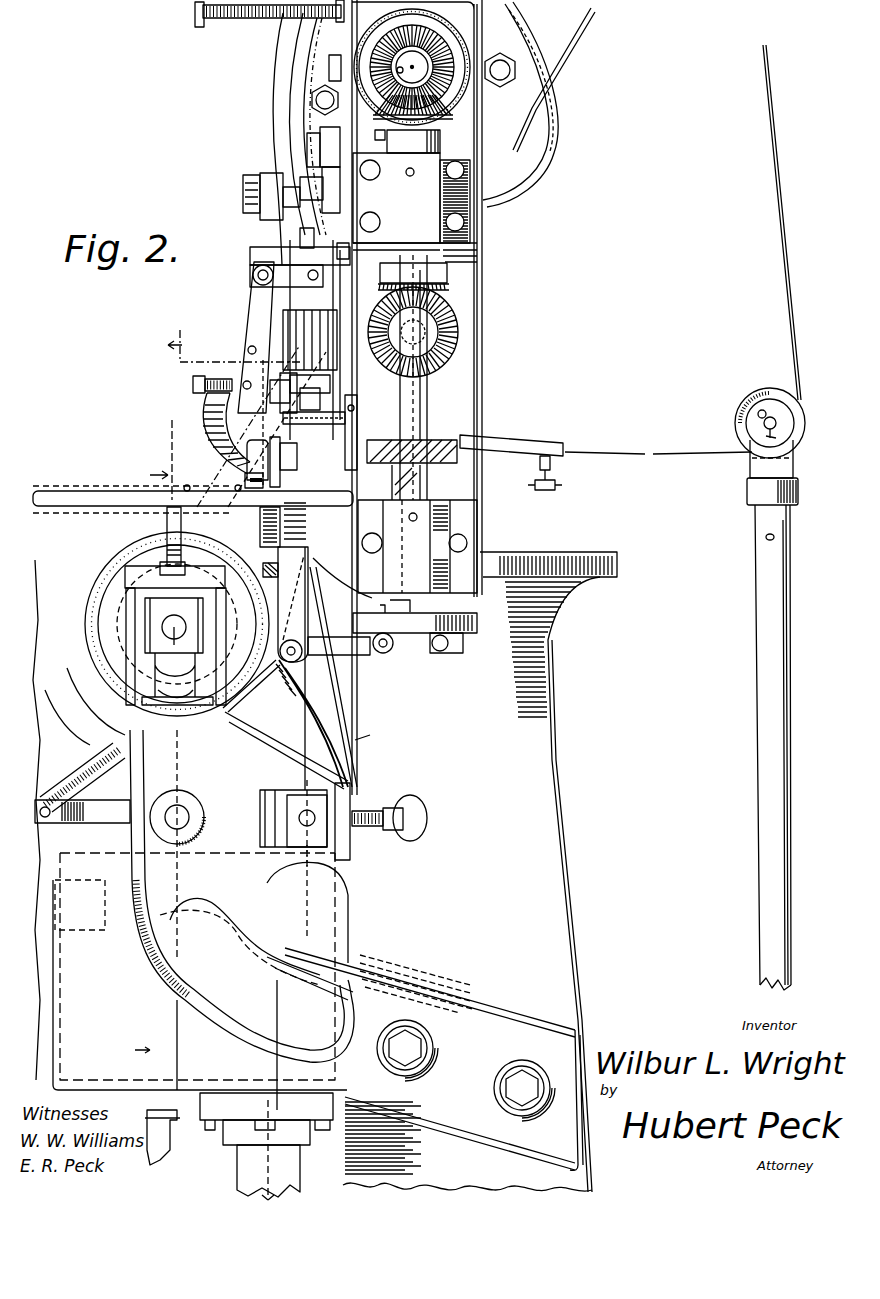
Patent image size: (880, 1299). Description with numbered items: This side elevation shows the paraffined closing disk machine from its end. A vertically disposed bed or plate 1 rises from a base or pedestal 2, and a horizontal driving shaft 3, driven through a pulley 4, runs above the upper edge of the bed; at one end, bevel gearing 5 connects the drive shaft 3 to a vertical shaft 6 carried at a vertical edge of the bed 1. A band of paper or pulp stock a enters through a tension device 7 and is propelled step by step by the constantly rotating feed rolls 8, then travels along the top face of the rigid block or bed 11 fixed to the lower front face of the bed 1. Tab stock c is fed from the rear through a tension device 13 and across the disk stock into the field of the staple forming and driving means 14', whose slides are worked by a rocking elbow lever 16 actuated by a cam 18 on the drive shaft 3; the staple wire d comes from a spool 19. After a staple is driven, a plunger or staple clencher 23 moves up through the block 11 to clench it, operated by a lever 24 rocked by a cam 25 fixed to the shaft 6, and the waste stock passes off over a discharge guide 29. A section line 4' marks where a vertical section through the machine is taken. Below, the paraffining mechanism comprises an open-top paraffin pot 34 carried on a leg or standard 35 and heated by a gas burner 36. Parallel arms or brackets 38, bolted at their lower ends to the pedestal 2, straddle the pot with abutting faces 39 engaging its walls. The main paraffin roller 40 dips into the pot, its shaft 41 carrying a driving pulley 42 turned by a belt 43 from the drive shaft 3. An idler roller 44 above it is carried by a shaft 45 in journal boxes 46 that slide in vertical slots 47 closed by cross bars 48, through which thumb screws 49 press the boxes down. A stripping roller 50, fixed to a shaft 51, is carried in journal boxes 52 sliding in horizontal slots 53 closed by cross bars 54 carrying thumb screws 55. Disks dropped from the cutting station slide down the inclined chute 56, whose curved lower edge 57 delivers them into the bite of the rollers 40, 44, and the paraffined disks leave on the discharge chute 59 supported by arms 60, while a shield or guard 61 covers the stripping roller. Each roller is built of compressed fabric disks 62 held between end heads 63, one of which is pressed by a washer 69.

The bed 1 is at (478, 312).
The base or pedestal 2 is at (558, 842).
The driving shaft 3 is at (400, 68).
The pulley 4 is at (272, 1150).
The bevel gearing 5 is at (446, 62).
The shaft 51 is at (543, 42).
The vertical shaft 6 is at (424, 397).
The tension device 7 is at (210, 408).
The feed rolls 8 is at (323, 400).
The bed block 11 is at (258, 478).
The tension device 13 is at (508, 440).
The lever 14' is at (239, 373).
The elbow lever 16 is at (313, 98).
The cam 18 is at (462, 68).
The spool 19 is at (232, 18).
The staple clencher 23 is at (285, 668).
The lever 24 is at (328, 657).
The cam 25 is at (378, 655).
The discharge guide 29 is at (270, 540).
The paraffin pot 34 is at (100, 1062).
The leg or standard 35 is at (237, 1176).
The gas burner 36 is at (173, 1137).
The arms or brackets 38 is at (140, 950).
The bearing or abutting faces 39 is at (262, 895).
The main paraffin roller 40 is at (140, 735).
The roller shaft 41 is at (185, 812).
The driving pulley 42 is at (70, 700).
The belt 43 is at (166, 545).
The paraffin idler roller 44 is at (127, 610).
The shaft 45 is at (372, 740).
The journal boxes 46 is at (150, 625).
The vertical guide-ways or slots 47 is at (142, 702).
The cross bars 48 is at (125, 578).
The set or thumb screws 49 is at (180, 526).
The idler stripping roller 50 is at (280, 795).
The journal boxes 52 is at (352, 862).
The horizontal slots or guides 53 is at (270, 835).
The cross bars 54 is at (355, 845).
The set or thumb screws 55 is at (428, 822).
The inclined chute 56 is at (259, 686).
The lower discharge edge 57 is at (240, 725).
The discharge chute 59 is at (70, 770).
The arms 60 is at (95, 823).
The shield or guard 61 is at (318, 728).
The fabric disks 62 is at (86, 612).
The end heads 63 is at (133, 560).
The washer 69 is at (112, 642).
The band of disk stock a is at (330, 420).
The band of tab stock c is at (614, 455).
The wire d is at (290, 150).
The section line 4' is at (234, 337).